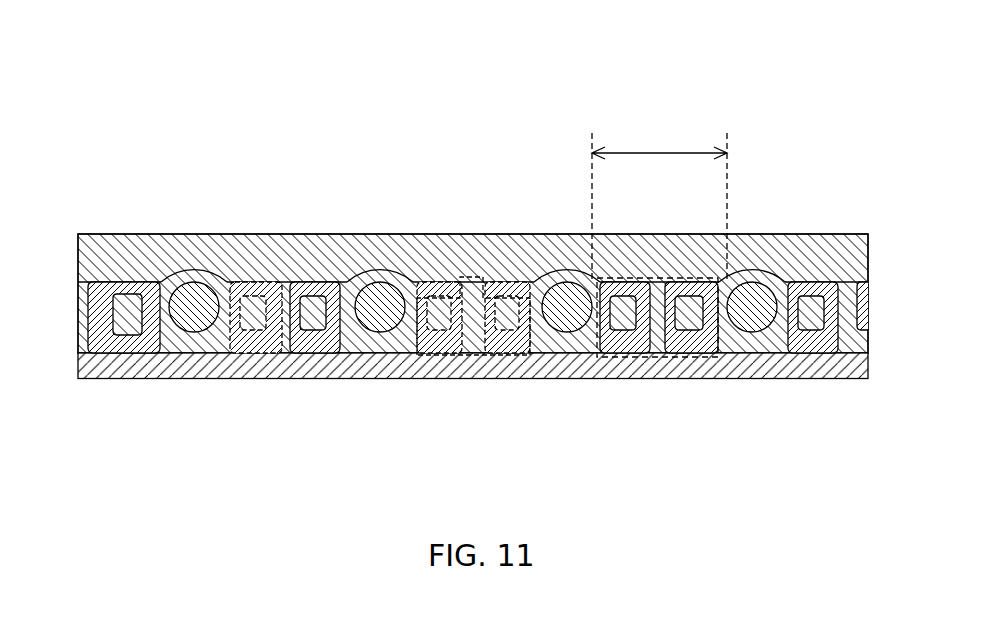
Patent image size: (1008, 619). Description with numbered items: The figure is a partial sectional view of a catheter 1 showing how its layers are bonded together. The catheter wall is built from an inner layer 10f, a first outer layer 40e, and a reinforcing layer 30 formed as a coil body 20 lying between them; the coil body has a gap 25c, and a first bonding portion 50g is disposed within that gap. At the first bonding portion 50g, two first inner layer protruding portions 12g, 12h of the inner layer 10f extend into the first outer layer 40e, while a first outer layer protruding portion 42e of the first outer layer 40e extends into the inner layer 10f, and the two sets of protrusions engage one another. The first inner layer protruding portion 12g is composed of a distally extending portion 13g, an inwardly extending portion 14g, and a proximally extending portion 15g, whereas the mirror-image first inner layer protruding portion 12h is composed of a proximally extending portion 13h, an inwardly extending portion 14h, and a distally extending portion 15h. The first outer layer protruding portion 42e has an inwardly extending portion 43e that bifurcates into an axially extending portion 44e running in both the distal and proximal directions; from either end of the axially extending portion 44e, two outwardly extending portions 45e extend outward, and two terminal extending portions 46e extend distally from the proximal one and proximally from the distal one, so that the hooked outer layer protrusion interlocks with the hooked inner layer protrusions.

The electronic component / substrate assembly 1 is at (520, 52).
The inner layer 10f is at (820, 362).
The first outer layer 40e is at (818, 250).
The reinforcing layer (coil body) 30 is at (473, 372).
The conductor 20 is at (752, 320).
The gap 25c is at (659, 196).
The first bonding portion 50g is at (660, 355).
The first inner layer protruding portion 12h is at (258, 274).
The proximally extending portion 13h is at (244, 289).
The inwardly extending portion 14h is at (244, 289).
The distally extending portion 15h is at (245, 330).
The first inner layer protruding portion 12g is at (338, 280).
The distally extending portion 13g is at (320, 295).
The inwardly extending portion 14g is at (309, 310).
The proximally extending portion 15g is at (318, 332).
The first outer layer protruding portion 42e is at (455, 326).
The inwardly extending portion 43e is at (455, 326).
The axially extending portion 44e is at (455, 328).
The outwardly extending portions 45e is at (455, 328).
The terminal extending portions 46e is at (418, 292).